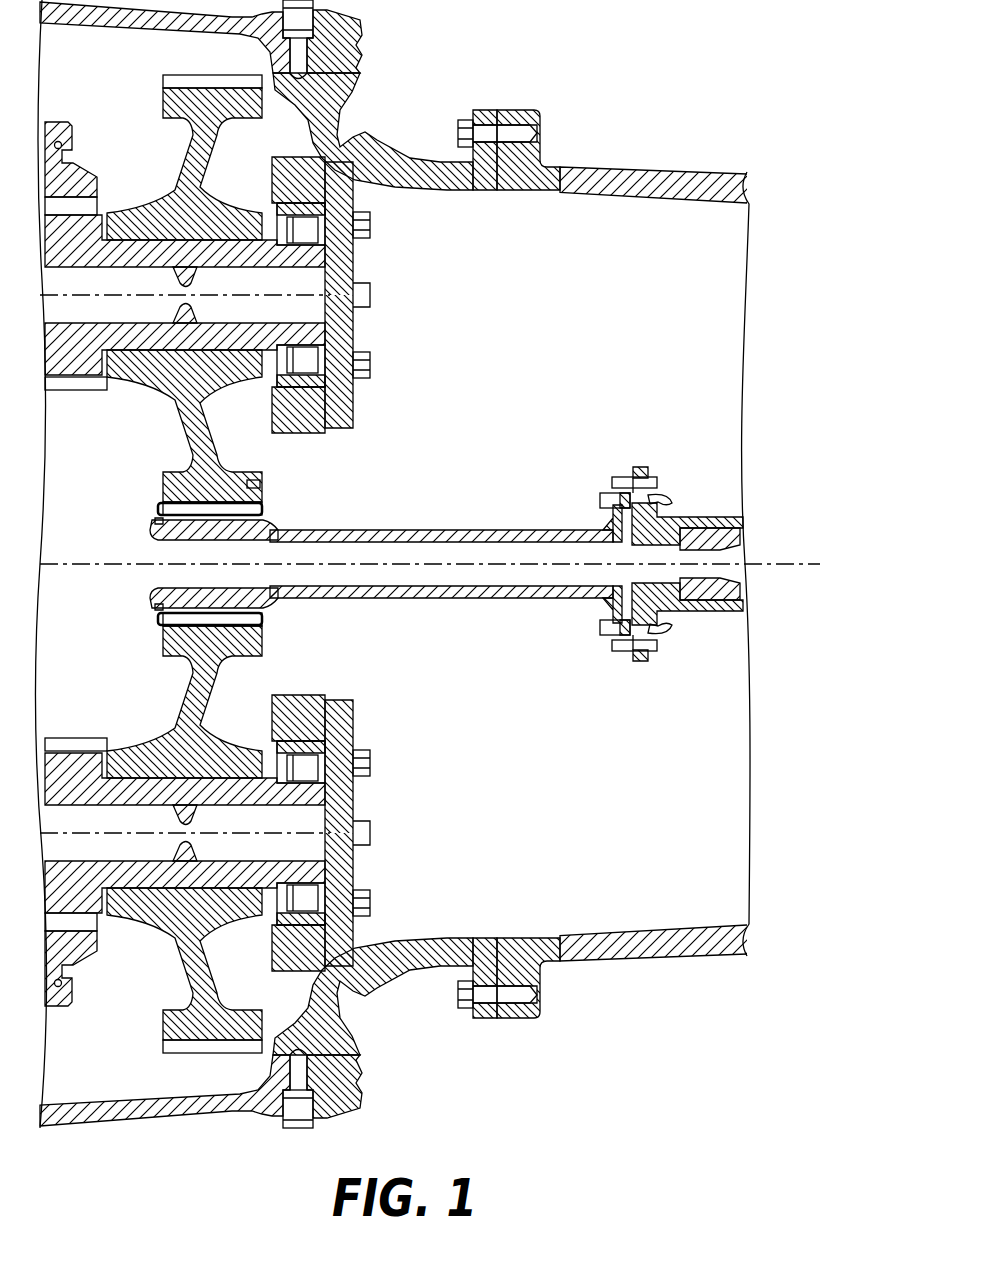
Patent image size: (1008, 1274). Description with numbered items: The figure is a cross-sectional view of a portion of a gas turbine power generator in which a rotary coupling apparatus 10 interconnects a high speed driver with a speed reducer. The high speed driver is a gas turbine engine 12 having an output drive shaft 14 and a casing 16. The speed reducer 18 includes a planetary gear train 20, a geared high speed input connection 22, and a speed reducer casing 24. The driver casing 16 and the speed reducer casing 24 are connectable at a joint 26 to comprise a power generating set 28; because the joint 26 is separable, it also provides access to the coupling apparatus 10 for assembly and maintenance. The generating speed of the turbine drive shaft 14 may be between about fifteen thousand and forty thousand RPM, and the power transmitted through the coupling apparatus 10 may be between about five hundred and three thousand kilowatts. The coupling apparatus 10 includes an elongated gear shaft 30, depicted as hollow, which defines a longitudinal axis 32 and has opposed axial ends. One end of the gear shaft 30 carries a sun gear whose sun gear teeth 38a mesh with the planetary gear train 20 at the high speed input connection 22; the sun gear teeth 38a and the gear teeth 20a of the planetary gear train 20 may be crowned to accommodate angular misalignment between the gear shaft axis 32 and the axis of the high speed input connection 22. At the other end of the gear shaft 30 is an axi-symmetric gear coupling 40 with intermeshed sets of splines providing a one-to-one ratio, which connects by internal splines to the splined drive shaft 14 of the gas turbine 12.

The rotary apparatus 10 is at (447, 626).
The gas turbine engine 12 is at (590, 98).
The drive shaft 14 is at (746, 540).
The casing 16 is at (680, 185).
The speed reducer 18 is at (428, 126).
The planetary gear train 20 is at (168, 384).
The gear teeth 20a is at (156, 514).
The geared high speed input connection 22 is at (272, 483).
The speed reducer casing 24 is at (388, 150).
The joint 26 is at (513, 200).
The power generating set 28 is at (566, 1014).
The elongated gear shaft 30 is at (442, 529).
The longitudinal axis 32 is at (88, 564).
The sun gear teeth 38a is at (268, 524).
The gear coupling 40 is at (652, 450).